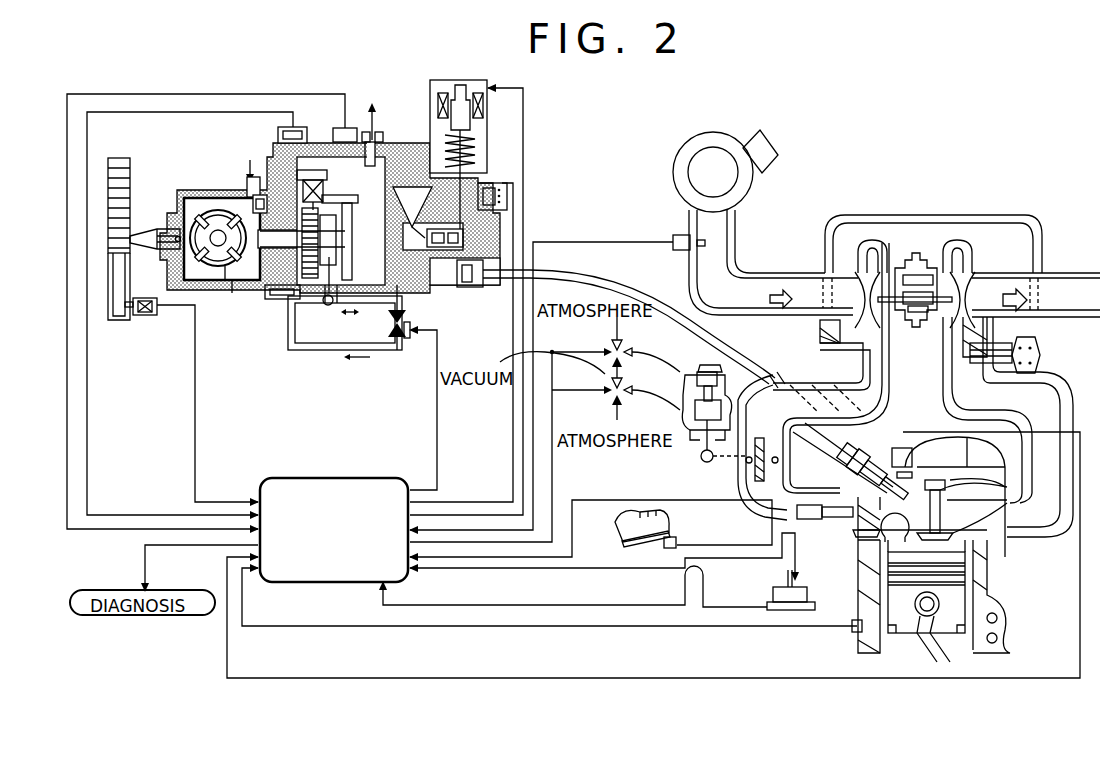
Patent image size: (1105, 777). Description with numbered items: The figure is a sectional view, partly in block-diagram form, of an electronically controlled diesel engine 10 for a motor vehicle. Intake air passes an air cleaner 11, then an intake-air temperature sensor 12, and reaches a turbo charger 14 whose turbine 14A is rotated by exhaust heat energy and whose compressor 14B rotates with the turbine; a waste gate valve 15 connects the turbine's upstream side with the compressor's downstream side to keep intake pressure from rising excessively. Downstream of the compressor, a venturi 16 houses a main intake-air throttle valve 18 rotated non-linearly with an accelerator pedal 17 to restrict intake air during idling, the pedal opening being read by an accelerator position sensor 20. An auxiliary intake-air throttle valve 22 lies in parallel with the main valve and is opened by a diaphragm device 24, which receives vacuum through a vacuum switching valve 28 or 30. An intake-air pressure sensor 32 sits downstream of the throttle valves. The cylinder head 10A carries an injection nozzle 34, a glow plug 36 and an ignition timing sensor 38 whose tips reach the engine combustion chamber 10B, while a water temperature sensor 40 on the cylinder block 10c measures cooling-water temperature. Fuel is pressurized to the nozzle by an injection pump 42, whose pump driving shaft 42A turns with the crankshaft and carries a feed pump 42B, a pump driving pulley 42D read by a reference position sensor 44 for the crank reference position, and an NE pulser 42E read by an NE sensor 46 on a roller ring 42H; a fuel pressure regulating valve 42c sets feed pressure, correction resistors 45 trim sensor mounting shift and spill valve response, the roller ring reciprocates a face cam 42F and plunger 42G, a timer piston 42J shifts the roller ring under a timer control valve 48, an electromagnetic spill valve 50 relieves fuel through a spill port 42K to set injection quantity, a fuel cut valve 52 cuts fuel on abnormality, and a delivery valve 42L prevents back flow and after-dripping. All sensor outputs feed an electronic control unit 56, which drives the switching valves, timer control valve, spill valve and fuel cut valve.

The diesel engine 10 is at (1000, 578).
The cylinder head 10A is at (925, 443).
The engine combustion chamber 10B is at (930, 517).
The cylinder block 10c is at (866, 605).
The air cleaner 11 is at (673, 157).
The intake-air temperature sensor 12 is at (675, 238).
The turbo charger 14 is at (898, 344).
The turbine 14A is at (958, 270).
The compressor 14B is at (857, 275).
The waste gate valve 15 is at (1042, 357).
The venturi 16 is at (742, 405).
The accelerator pedal 17 is at (632, 552).
The main intake-air throttle valve 18 is at (780, 460).
The accelerator position sensor 20 is at (848, 472).
The auxiliary intake-air throttle valve 22 is at (738, 480).
The diaphragm device 24 is at (696, 372).
The vacuum switching valve 28 is at (610, 348).
The vacuum switching valve 30 is at (612, 398).
The intake-air pressure sensor 32 is at (799, 580).
The injection nozzle 34 is at (866, 477).
The glow plug 36 is at (930, 508).
The ignition timing sensor 38 is at (800, 500).
The water temperature sensor 40 is at (855, 634).
The injection pump 42 is at (333, 84).
The pump driving shaft 42A is at (146, 228).
The feed pump 42B is at (267, 268).
The fuel pressure regulating valve 42c is at (266, 195).
The pump driving pulley 42D is at (140, 142).
The NE pulser 42E is at (272, 299).
The face cam 42F is at (324, 210).
The plunger 42G is at (409, 290).
The roller ring 42H is at (326, 190).
The timer piston 42J is at (336, 308).
The spill port 42K is at (462, 226).
The delivery valve 42L is at (470, 288).
The reference position sensor 44 is at (146, 316).
The correction resistors 45 is at (290, 128).
The NE sensor 46 is at (372, 158).
The timer control valve 48 is at (411, 340).
The electromagnetic spill valve 50 is at (442, 80).
The fuel cut valve 52 is at (500, 155).
The electronic control unit 56 is at (342, 478).